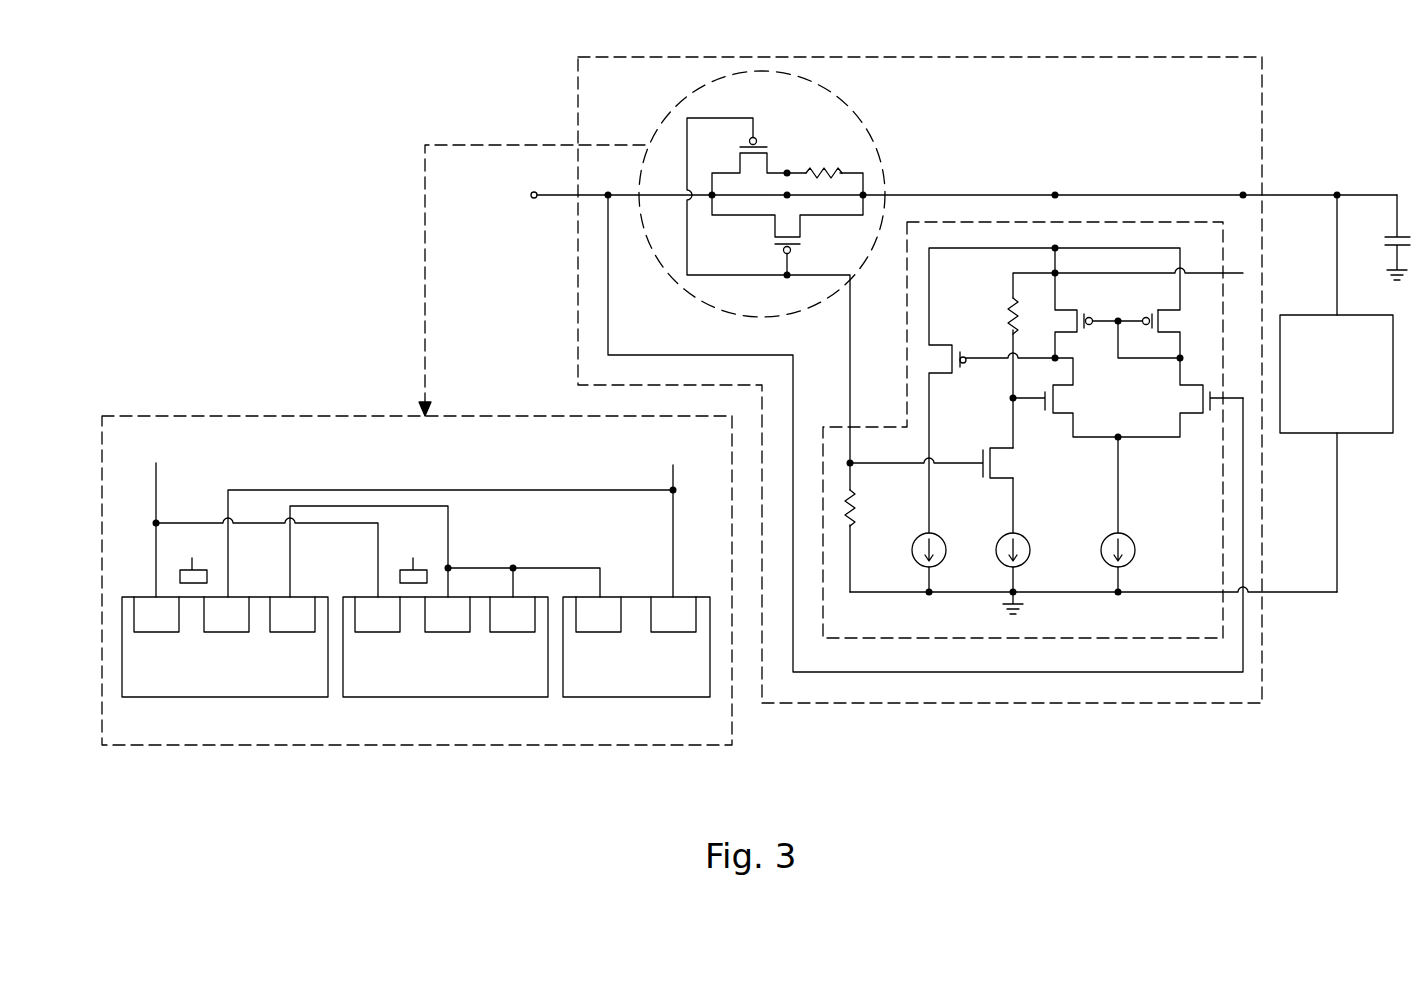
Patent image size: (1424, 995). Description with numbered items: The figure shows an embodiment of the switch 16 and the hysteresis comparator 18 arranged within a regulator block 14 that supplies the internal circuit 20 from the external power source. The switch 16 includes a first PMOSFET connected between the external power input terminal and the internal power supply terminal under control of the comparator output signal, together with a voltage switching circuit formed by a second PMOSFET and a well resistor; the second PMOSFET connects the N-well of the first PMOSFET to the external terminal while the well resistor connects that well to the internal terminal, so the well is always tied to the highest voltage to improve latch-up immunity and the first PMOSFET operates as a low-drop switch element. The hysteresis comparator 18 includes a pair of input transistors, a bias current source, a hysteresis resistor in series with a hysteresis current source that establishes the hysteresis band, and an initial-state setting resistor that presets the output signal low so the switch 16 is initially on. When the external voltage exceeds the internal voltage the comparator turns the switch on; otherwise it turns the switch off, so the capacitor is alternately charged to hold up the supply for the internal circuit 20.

The voltage regulator block 14 is at (578, 280).
The switch 16 is at (882, 148).
The hysteresis comparator 18 is at (1128, 222).
The internal circuit 20 is at (1355, 433).